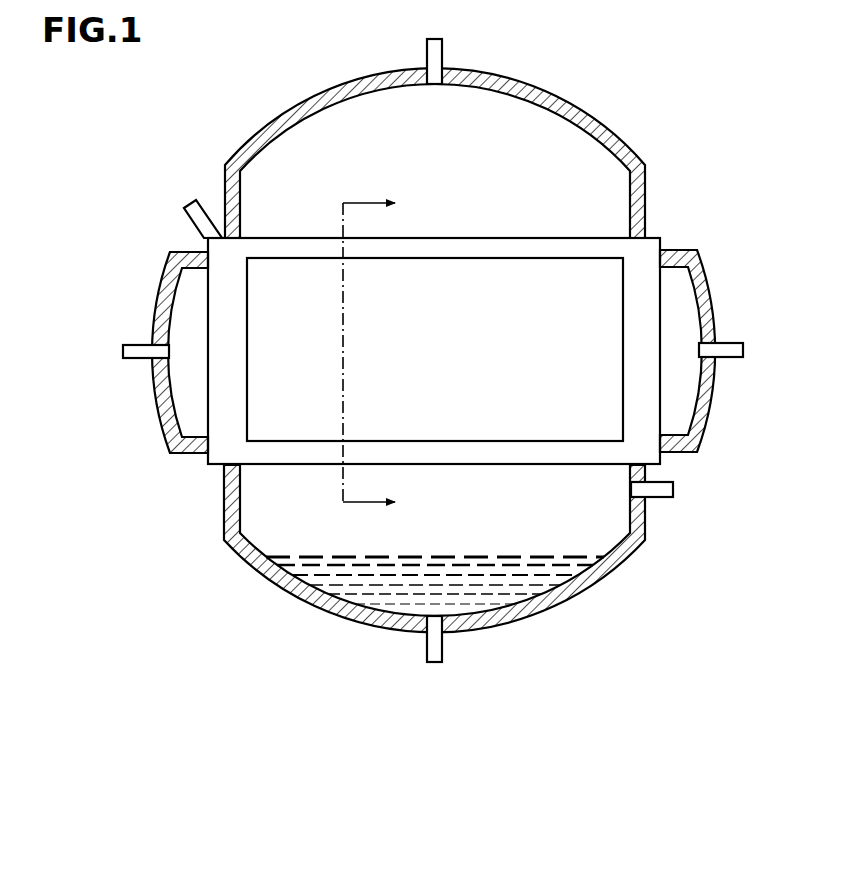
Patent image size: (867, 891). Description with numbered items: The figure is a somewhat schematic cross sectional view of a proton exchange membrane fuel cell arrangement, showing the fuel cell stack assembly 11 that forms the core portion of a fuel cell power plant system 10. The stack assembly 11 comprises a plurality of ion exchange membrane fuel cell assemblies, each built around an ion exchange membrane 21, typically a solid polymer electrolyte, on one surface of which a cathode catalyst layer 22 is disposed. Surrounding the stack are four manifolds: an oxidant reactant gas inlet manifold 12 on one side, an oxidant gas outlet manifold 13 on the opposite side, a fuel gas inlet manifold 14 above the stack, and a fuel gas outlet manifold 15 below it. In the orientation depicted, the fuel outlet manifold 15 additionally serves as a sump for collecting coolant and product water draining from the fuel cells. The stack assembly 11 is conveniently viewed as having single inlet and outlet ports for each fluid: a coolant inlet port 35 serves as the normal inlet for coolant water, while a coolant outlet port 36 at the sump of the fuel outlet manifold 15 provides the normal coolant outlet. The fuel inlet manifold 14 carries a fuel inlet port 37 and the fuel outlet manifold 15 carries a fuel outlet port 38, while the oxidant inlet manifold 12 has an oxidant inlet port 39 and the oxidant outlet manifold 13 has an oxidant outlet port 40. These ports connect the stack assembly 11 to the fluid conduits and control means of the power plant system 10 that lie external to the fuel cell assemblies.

The fuel cell power plant system 10 is at (435, 349).
The fuel cell stack assembly 11 is at (426, 325).
The oxidant reactant gas inlet manifold 12 is at (155, 307).
The oxidant gas outlet manifold 13 is at (712, 287).
The fuel gas inlet manifold 14 is at (528, 81).
The fuel gas outlet manifold 15 is at (540, 612).
The ion exchange membrane 21 is at (647, 247).
The cathode catalyst layer 22 is at (545, 267).
The coolant inlet port 35 is at (201, 224).
The coolant outlet port 36 is at (441, 645).
The fuel inlet port 37 is at (436, 53).
The fuel outlet port 38 is at (656, 495).
The oxidant inlet port 39 is at (140, 356).
The oxidant outlet port 40 is at (722, 357).